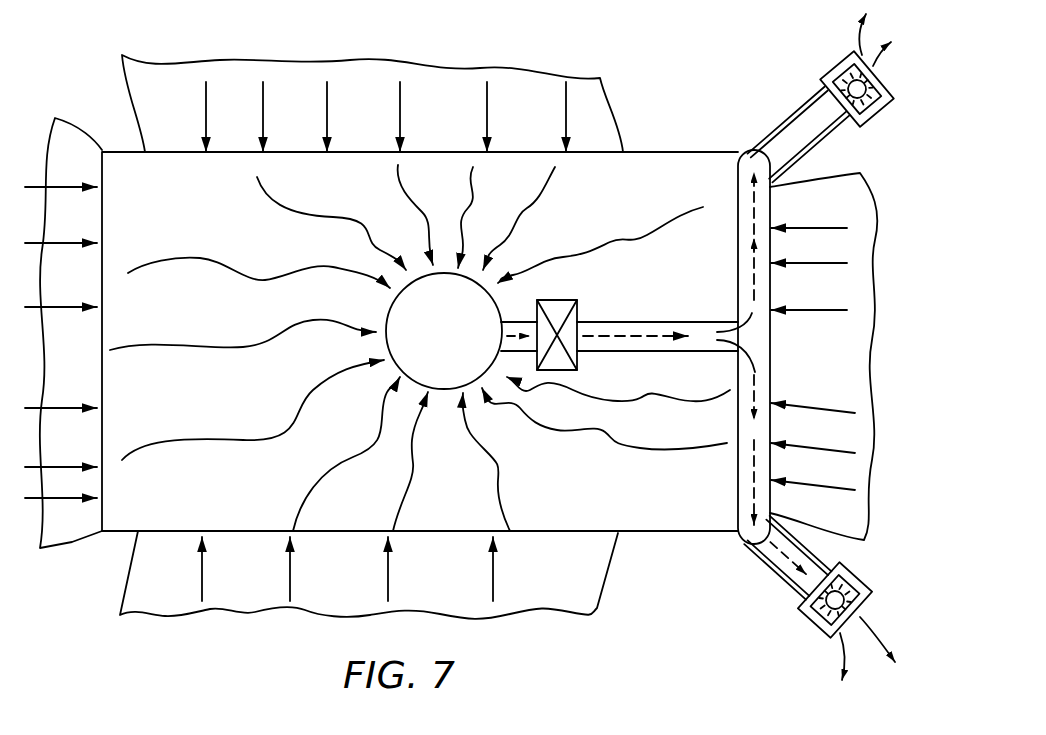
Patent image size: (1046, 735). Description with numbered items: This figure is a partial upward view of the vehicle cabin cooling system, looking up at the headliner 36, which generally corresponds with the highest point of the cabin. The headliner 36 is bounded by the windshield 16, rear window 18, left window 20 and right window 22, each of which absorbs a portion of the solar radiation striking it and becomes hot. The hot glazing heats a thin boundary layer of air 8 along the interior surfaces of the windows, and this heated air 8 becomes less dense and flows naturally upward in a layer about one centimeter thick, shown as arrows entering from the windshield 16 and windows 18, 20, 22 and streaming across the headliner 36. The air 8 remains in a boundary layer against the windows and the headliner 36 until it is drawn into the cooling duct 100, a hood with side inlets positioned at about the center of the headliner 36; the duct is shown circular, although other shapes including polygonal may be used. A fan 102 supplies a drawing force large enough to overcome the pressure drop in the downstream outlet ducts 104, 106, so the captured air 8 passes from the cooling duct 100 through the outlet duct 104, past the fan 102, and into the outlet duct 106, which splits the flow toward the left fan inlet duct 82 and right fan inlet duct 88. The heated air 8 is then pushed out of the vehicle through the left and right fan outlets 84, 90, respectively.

The air 8 is at (327, 120).
The windshield 16 is at (72, 543).
The rear window 18 is at (822, 203).
The left window 20 is at (510, 113).
The right window 22 is at (543, 573).
The headliner 36 is at (223, 500).
The left fan inlet duct 82 is at (787, 130).
The left fan outlet 84 is at (830, 62).
The right fan inlet duct 88 is at (763, 563).
The right fan outlet 90 is at (810, 623).
The cooling duct 100 is at (462, 365).
The fan 102 is at (563, 300).
The outlet duct 104 is at (617, 351).
The outlet duct 106 is at (737, 212).